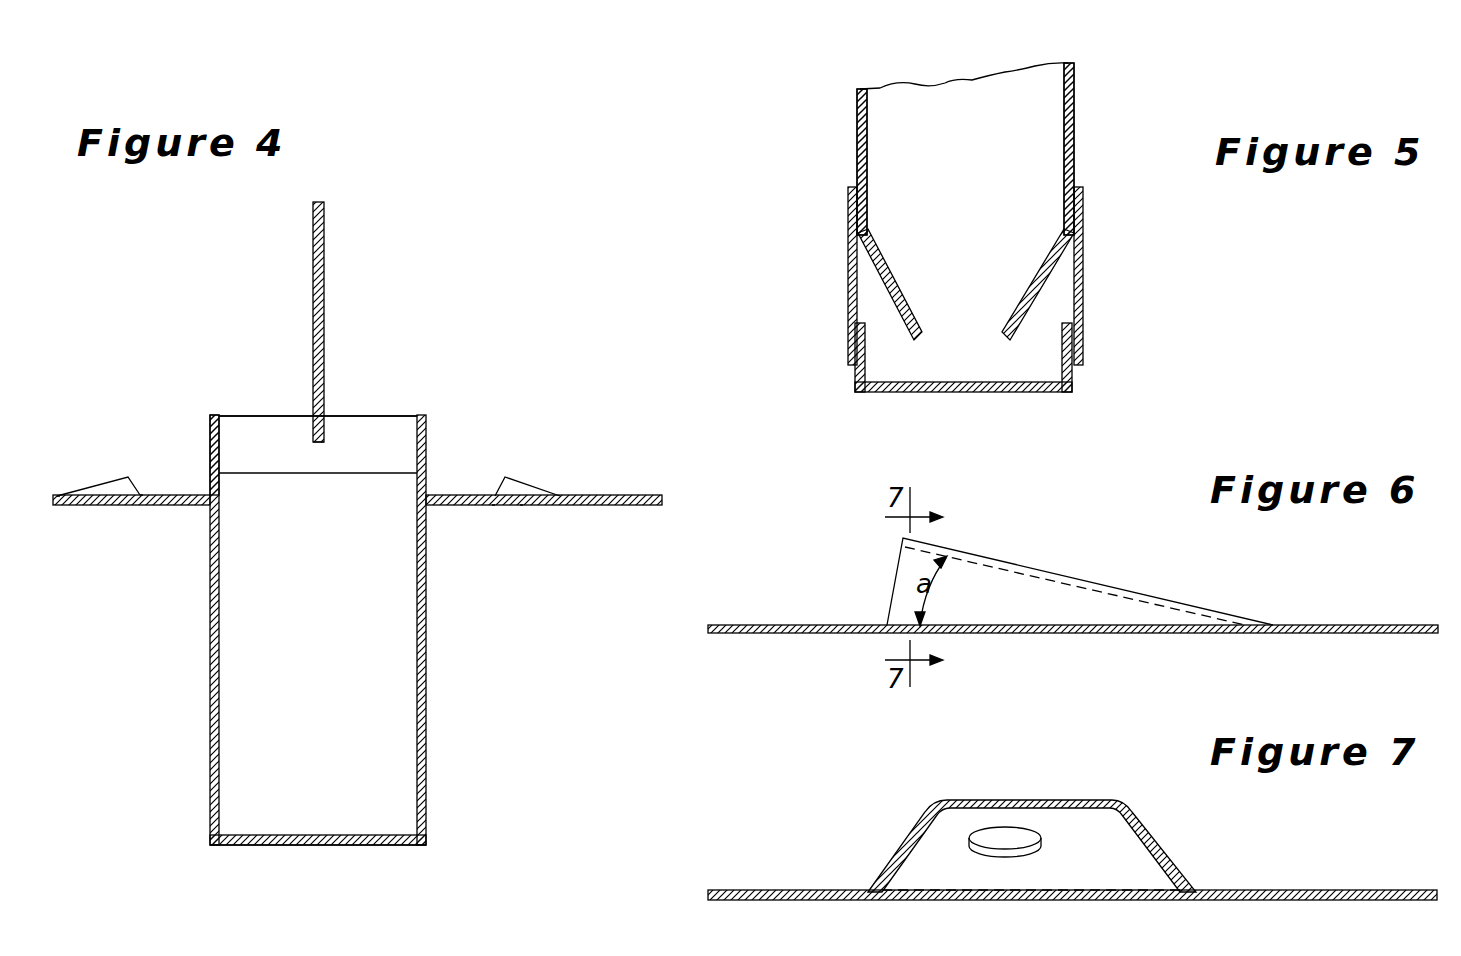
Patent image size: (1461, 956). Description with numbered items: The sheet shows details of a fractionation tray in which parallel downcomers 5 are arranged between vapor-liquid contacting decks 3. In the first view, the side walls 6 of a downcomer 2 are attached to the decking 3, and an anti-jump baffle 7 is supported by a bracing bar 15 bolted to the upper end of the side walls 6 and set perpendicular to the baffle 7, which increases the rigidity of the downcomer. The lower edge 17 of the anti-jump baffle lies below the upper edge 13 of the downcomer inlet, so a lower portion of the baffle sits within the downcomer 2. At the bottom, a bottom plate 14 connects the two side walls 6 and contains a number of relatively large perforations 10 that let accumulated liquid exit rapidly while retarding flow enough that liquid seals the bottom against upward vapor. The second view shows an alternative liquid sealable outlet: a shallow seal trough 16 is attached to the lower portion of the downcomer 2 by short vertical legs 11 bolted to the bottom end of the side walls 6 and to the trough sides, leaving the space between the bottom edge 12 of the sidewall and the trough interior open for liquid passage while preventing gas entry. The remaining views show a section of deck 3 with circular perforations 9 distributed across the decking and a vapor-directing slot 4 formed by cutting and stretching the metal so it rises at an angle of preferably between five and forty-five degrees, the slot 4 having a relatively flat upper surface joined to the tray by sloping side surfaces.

In FIG. 4, the downcomer 2 is at (209, 691).
In FIG. 5, the downcomer 2 is at (1077, 102).
In FIG. 4, the deck 3 is at (97, 506).
In FIG. 6, the deck 3 is at (828, 633).
In FIG. 7, the deck 3 is at (720, 890).
In FIG. 4, the vapor-directing slot 4 is at (114, 483).
In FIG. 6, the vapor-directing slot 4 is at (1128, 589).
In FIG. 7, the vapor-directing slot 4 is at (1040, 803).
In FIG. 4, the downcomer 5 is at (375, 660).
In FIG. 4, the downcomer side wall 6 is at (209, 448).
In FIG. 5, the downcomer side wall 6 is at (856, 158).
In FIG. 4, the anti-jump baffle 7 is at (323, 312).
In FIG. 4, the circular perforation 9 is at (112, 507).
In FIG. 6, the circular perforation 9 is at (1020, 562).
In FIG. 7, the circular perforation 9 is at (778, 890).
In FIG. 4, the perforation 10 is at (245, 846).
In FIG. 5, the leg 11 is at (848, 302).
In FIG. 5, the bottom edge of the downcomer sidewall 12 is at (918, 330).
In FIG. 4, the upper edge of the downcomer inlet 13 is at (345, 416).
In FIG. 4, the bottom plate 14 is at (356, 835).
In FIG. 4, the bracing bar 15 is at (273, 440).
In FIG. 5, the seal trough 16 is at (992, 392).
In FIG. 4, the lower edge of the anti-jump baffle 17 is at (322, 443).